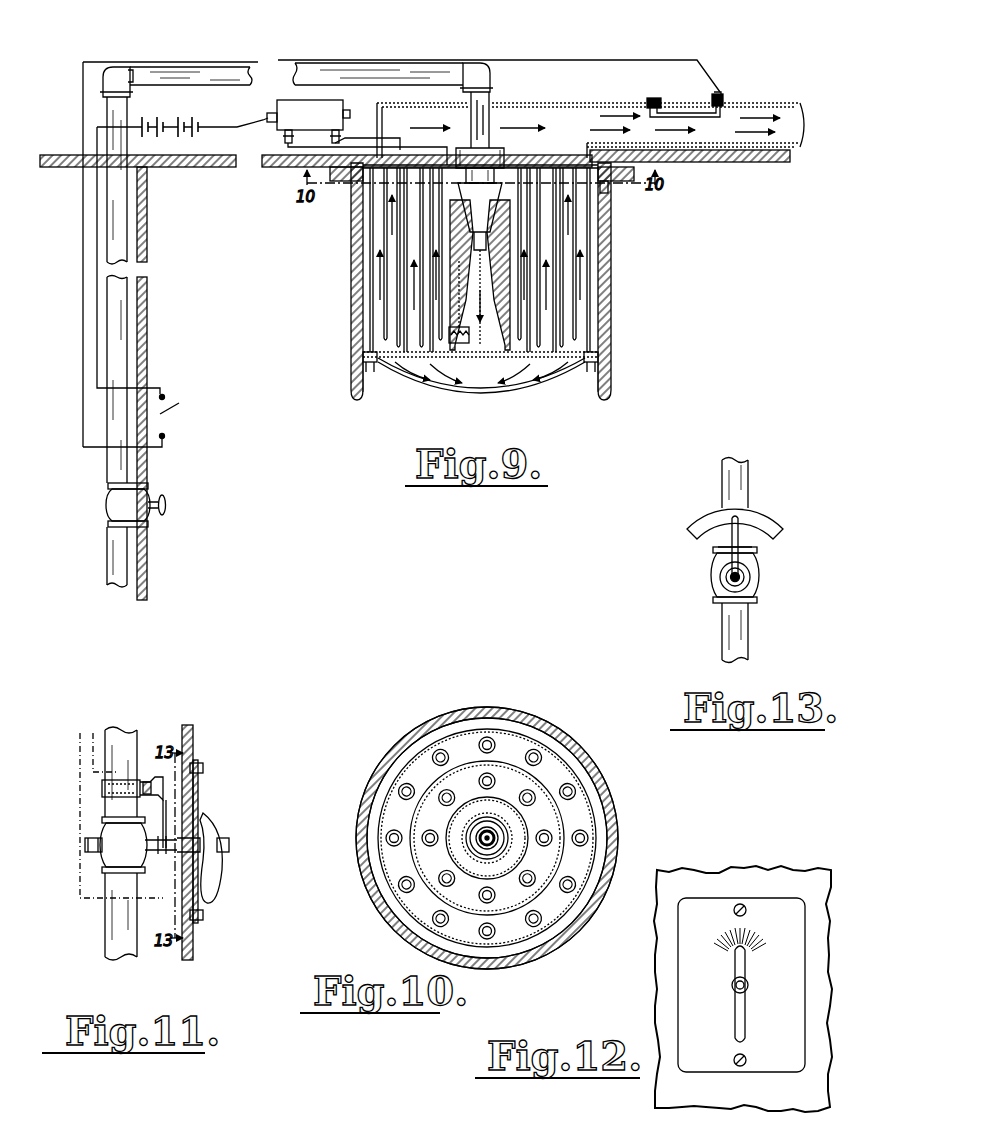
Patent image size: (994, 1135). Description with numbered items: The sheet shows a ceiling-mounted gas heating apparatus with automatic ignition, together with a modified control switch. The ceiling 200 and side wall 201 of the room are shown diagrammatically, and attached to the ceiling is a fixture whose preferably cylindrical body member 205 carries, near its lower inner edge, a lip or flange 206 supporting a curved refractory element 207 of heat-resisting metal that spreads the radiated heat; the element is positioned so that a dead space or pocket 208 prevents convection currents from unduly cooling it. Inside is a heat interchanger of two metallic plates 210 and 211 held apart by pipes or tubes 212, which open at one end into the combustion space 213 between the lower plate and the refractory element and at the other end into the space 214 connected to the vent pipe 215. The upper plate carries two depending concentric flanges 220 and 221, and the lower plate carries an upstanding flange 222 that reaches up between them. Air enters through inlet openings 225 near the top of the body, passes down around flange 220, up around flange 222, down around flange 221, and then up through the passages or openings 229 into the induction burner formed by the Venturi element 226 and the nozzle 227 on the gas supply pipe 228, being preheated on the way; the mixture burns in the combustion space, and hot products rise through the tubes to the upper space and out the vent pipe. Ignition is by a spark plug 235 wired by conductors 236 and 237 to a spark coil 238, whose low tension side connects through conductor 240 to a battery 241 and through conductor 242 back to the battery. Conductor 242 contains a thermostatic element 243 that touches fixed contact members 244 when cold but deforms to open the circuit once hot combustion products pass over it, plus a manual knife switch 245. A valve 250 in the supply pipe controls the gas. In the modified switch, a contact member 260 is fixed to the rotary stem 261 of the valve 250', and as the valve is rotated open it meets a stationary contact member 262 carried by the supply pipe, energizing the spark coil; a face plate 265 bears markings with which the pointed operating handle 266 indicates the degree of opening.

In FIG. 9, the ceiling 200 is at (744, 163).
In FIG. 9, the side wall 201 is at (147, 350).
In FIG. 9, the frame or body member 205 is at (612, 266).
In FIG. 10, the frame or body member 205 is at (520, 715).
In FIG. 9, the lip or flange 206 is at (612, 360).
In FIG. 9, the refractory element 207 is at (505, 388).
In FIG. 9, the dead space or pocket 208 is at (580, 375).
In FIG. 9, the metallic plate 210 is at (598, 353).
In FIG. 9, the metallic plate 211 is at (608, 188).
In FIG. 9, the pipes or tubes 212 is at (384, 290).
In FIG. 10, the pipes or tubes 212 is at (538, 757).
In FIG. 9, the combustion space 213 is at (476, 380).
In FIG. 9, the space 214 is at (560, 105).
In FIG. 9, the vent pipe 215 is at (772, 110).
In FIG. 9, the depending flange 220 is at (592, 313).
In FIG. 10, the depending flange 220 is at (380, 810).
In FIG. 9, the depending flange 221 is at (474, 310).
In FIG. 10, the depending flange 221 is at (520, 850).
In FIG. 9, the upstanding flange 222 is at (404, 240).
In FIG. 10, the upstanding flange 222 is at (555, 815).
In FIG. 9, the air inlet openings 225 is at (345, 192).
In FIG. 10, the air inlet openings 225 is at (398, 748).
In FIG. 9, the Venturi element 226 is at (460, 258).
In FIG. 10, the Venturi element 226 is at (465, 850).
In FIG. 9, the nozzle 227 is at (488, 190).
In FIG. 9, the gas supply pipe 228 is at (372, 78).
In FIG. 13, the gas supply pipe 228 is at (742, 476).
In FIG. 11, the gas supply pipe 228 is at (115, 745).
In FIG. 9, the passages or openings 229 is at (440, 192).
In FIG. 10, the passages or openings 229 is at (497, 858).
In FIG. 9, the spark plug 235 is at (452, 345).
In FIG. 9, the conductor 236 is at (300, 147).
In FIG. 9, the conductor 237 is at (320, 167).
In FIG. 9, the spark coil 238 is at (290, 118).
In FIG. 9, the conductor 240 is at (214, 125).
In FIG. 9, the battery 241 is at (158, 122).
In FIG. 9, the conductor 242 is at (490, 58).
In FIG. 9, the thermostatic element 243 is at (674, 110).
In FIG. 9, the fixed contact members 244 is at (724, 97).
In FIG. 9, the switch 245 is at (180, 405).
In FIG. 9, the valve 250 is at (146, 490).
In FIG. 13, the valve 250' is at (713, 581).
In FIG. 11, the valve 250' is at (94, 849).
In FIG. 13, the contact member 260 is at (732, 536).
In FIG. 11, the contact member 260 is at (166, 815).
In FIG. 13, the rotary stem 261 is at (750, 577).
In FIG. 11, the rotary stem 261 is at (192, 840).
In FIG. 13, the contact member 262 is at (757, 522).
In FIG. 11, the contact member 262 is at (162, 786).
In FIG. 12, the face plate 265 is at (697, 985).
In FIG. 12, the operating handle 266 is at (737, 1023).